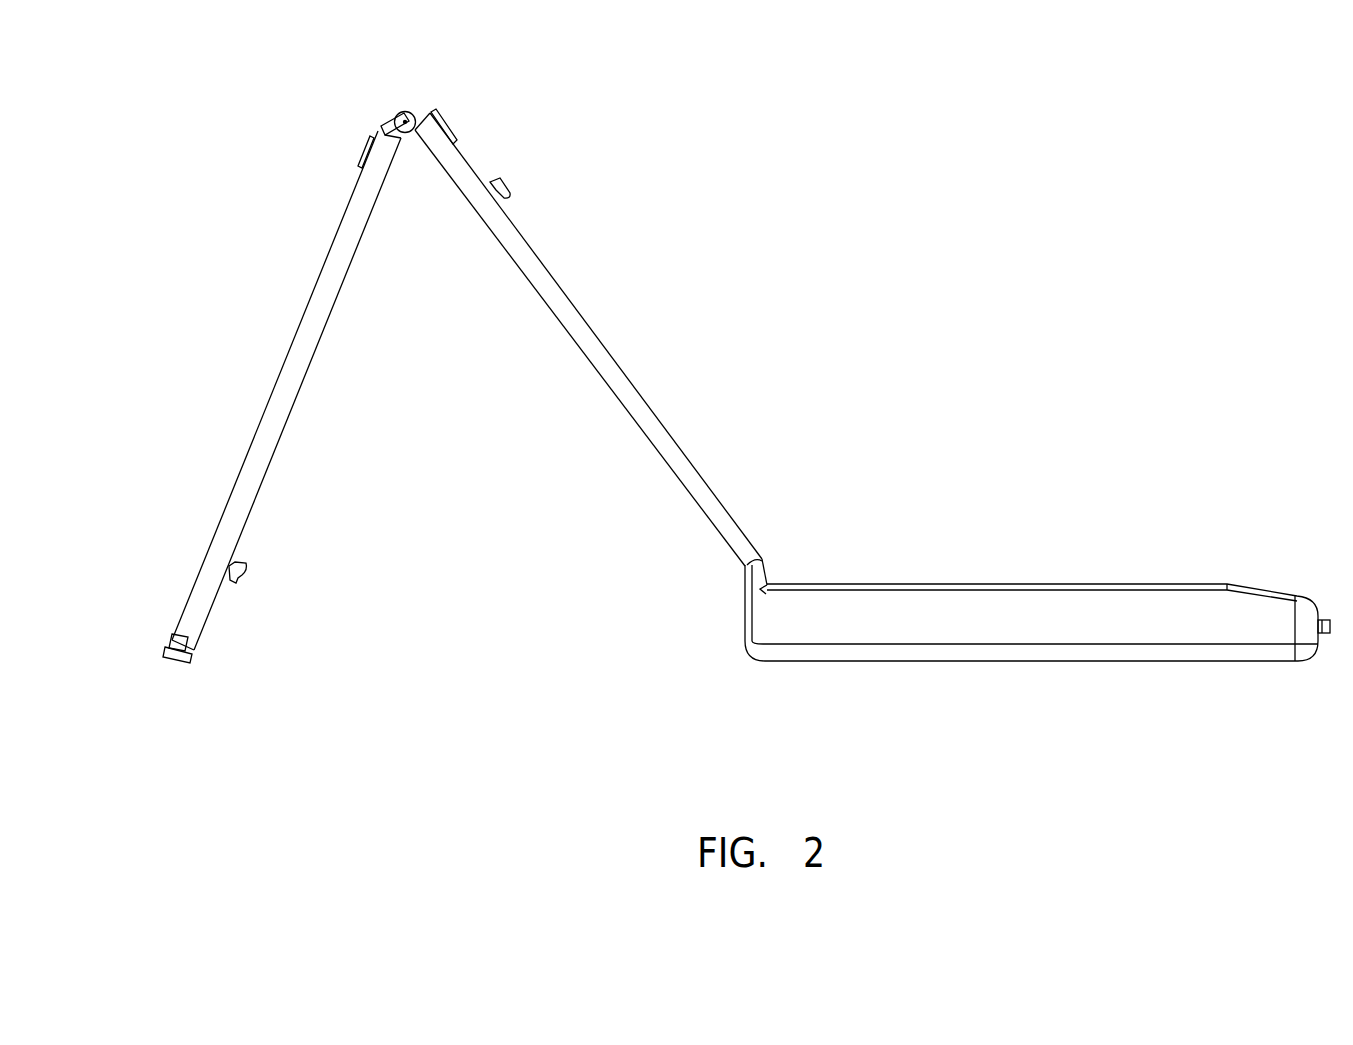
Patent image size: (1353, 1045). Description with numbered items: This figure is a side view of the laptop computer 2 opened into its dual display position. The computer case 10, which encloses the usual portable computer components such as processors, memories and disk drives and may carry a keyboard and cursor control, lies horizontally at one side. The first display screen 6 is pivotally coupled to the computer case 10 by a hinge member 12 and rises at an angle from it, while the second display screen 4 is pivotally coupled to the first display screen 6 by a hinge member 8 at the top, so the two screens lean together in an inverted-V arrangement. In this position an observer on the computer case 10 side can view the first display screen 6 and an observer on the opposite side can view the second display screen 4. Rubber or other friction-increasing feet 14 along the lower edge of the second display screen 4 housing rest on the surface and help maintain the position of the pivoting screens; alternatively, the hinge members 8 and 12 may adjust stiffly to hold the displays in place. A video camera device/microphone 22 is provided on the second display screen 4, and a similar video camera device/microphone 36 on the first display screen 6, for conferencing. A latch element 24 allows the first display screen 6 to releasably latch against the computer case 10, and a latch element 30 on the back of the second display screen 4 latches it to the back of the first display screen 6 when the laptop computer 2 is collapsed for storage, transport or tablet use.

The laptop computer 2 is at (840, 207).
The second display screen 4 is at (283, 440).
The first display screen 6 is at (588, 340).
The hinge member 8 is at (413, 115).
The computer case 10 is at (848, 613).
The hinge member 12 is at (765, 568).
The friction-increasing feet 14 is at (192, 657).
The video camera device/microphone 22 is at (378, 133).
The latch element 24 is at (510, 186).
The latch element 30 is at (238, 575).
The video camera device/microphone 36 is at (453, 138).